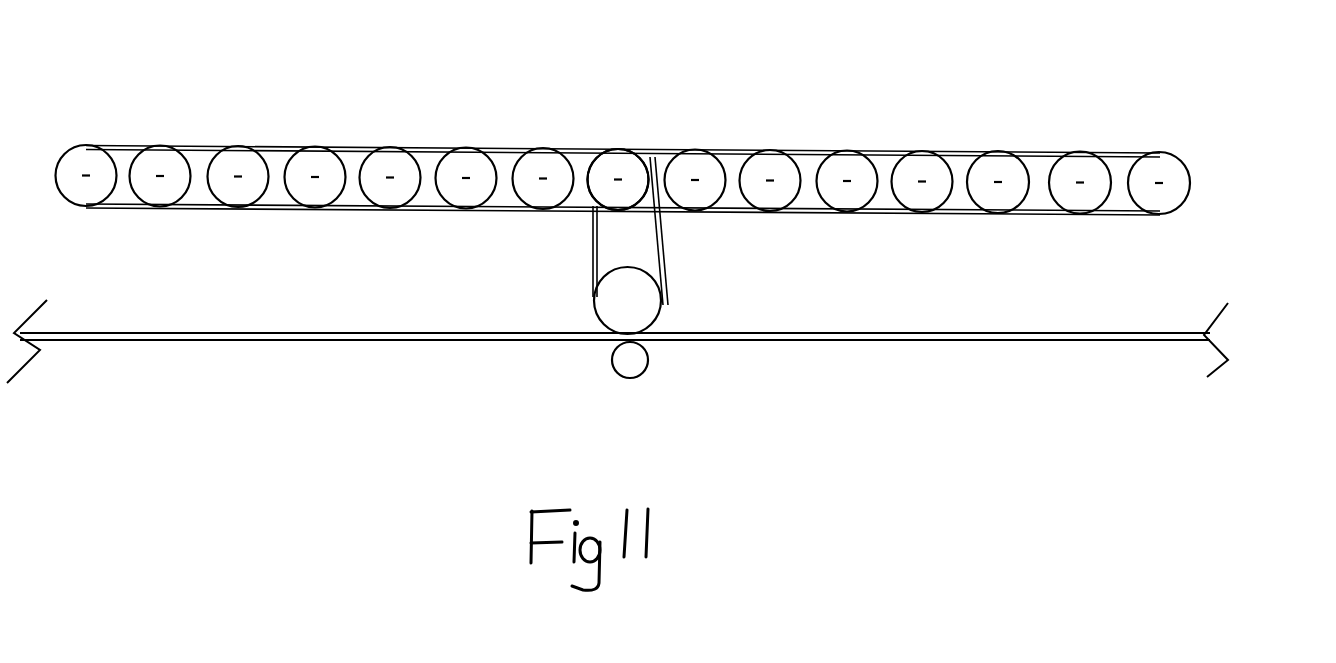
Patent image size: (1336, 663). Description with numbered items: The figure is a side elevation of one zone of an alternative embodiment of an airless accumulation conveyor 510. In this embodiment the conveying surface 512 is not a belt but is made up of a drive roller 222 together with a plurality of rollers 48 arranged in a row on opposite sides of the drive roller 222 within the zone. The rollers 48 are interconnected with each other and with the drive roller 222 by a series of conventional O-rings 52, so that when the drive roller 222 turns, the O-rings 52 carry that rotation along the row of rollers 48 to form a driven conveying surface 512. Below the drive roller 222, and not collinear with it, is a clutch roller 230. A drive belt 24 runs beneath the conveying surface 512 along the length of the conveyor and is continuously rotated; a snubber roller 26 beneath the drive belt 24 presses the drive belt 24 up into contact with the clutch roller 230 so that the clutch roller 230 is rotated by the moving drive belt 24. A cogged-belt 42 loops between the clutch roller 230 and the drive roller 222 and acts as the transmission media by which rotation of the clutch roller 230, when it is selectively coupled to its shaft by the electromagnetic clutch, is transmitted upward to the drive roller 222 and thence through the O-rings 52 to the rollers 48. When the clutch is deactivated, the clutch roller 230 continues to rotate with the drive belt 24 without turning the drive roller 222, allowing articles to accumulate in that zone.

The rollers 48 is at (62, 195).
The O-rings 52 is at (128, 146).
The drive roller 222 is at (613, 148).
The cogged-belt 42 is at (665, 245).
The clutch roller 230 is at (661, 316).
The drive belt 24 is at (927, 332).
The snubber roller 26 is at (645, 372).
The airless accumulation conveyor 510 is at (1017, 150).
The conveying surface 512 is at (1183, 150).